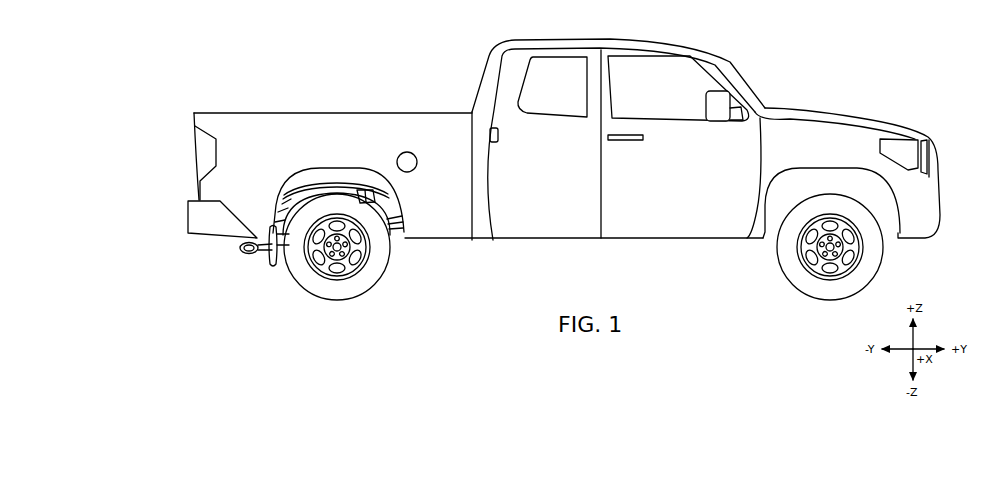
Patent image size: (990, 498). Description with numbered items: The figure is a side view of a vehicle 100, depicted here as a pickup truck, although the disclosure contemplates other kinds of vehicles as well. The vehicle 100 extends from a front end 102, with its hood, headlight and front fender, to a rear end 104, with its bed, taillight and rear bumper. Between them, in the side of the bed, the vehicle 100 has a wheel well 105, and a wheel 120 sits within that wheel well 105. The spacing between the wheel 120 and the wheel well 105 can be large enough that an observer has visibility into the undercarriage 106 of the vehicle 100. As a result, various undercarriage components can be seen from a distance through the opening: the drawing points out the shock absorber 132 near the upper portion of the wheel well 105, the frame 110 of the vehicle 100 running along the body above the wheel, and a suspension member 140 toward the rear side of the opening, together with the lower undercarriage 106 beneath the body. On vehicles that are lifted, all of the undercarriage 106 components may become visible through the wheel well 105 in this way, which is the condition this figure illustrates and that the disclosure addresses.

The vehicle 100 is at (633, 133).
The front end 102 is at (869, 156).
The rear end 104 is at (313, 160).
The wheel well 105 is at (341, 158).
The undercarriage 106 is at (365, 244).
The frame 110 is at (327, 185).
The wheel 120 is at (304, 247).
The shock absorber 132 is at (387, 167).
The suspension member 140 is at (420, 208).